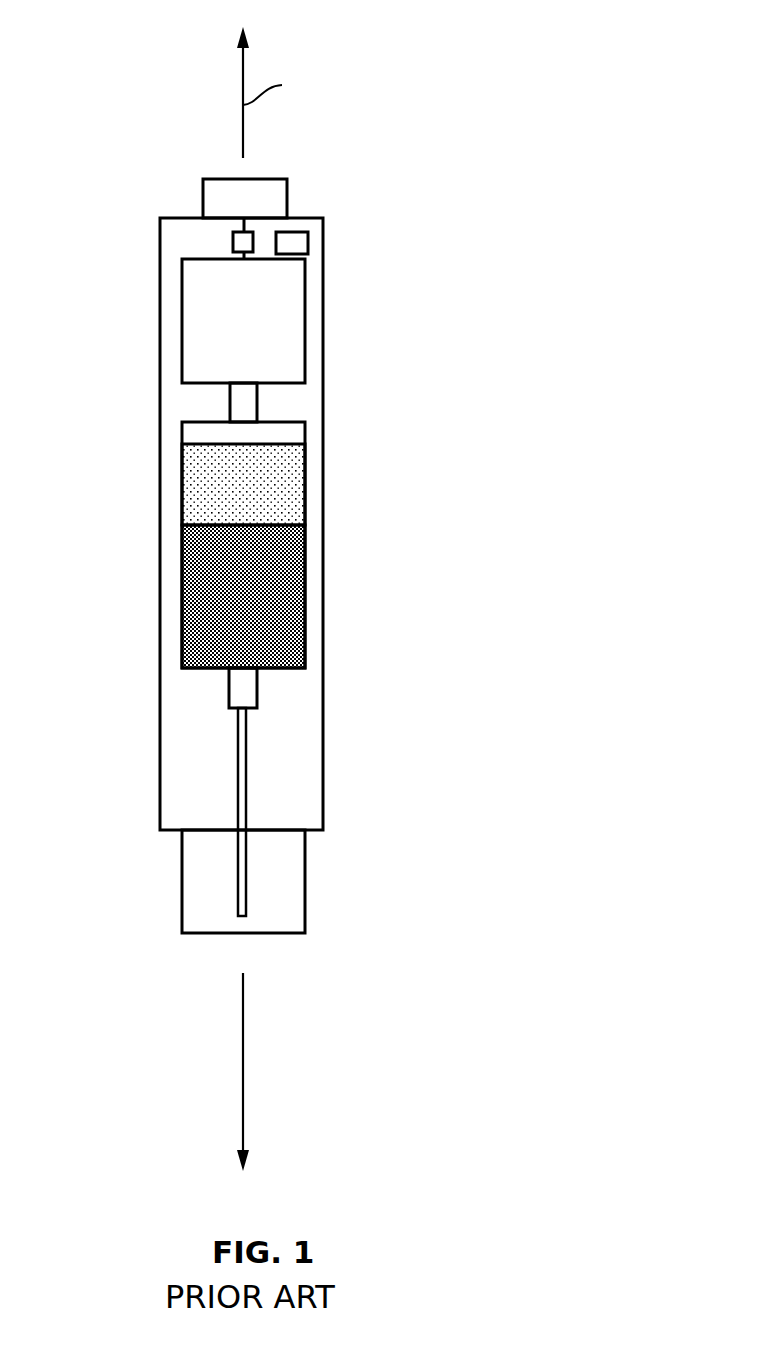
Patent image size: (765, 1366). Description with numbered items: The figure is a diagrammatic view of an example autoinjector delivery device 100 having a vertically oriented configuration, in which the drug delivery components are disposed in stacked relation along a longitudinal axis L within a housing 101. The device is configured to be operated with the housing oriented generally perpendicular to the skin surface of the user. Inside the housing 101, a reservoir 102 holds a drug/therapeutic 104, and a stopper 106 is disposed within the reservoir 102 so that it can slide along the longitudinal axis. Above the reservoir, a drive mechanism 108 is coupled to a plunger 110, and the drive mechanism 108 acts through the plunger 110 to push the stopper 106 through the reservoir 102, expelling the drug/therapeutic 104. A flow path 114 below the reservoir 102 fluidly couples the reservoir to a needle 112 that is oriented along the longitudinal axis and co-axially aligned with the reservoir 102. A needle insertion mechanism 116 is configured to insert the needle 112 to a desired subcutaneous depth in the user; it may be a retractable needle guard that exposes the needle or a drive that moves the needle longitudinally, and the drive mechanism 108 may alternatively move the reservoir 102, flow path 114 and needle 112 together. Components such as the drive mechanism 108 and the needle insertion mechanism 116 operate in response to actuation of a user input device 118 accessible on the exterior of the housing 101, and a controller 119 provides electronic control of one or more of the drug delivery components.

The delivery device 100 is at (440, 48).
The housing 101 is at (180, 265).
The reservoir 102 is at (305, 625).
The drug/therapeutic 104 is at (202, 627).
The stopper 106 is at (297, 513).
The drive mechanism 108 is at (305, 370).
The plunger 110 is at (257, 400).
The needle 112 is at (238, 790).
The flow path 114 is at (257, 697).
The needle insertion mechanism 116 is at (180, 367).
The user input device 118 is at (270, 200).
The controller 119 is at (308, 243).